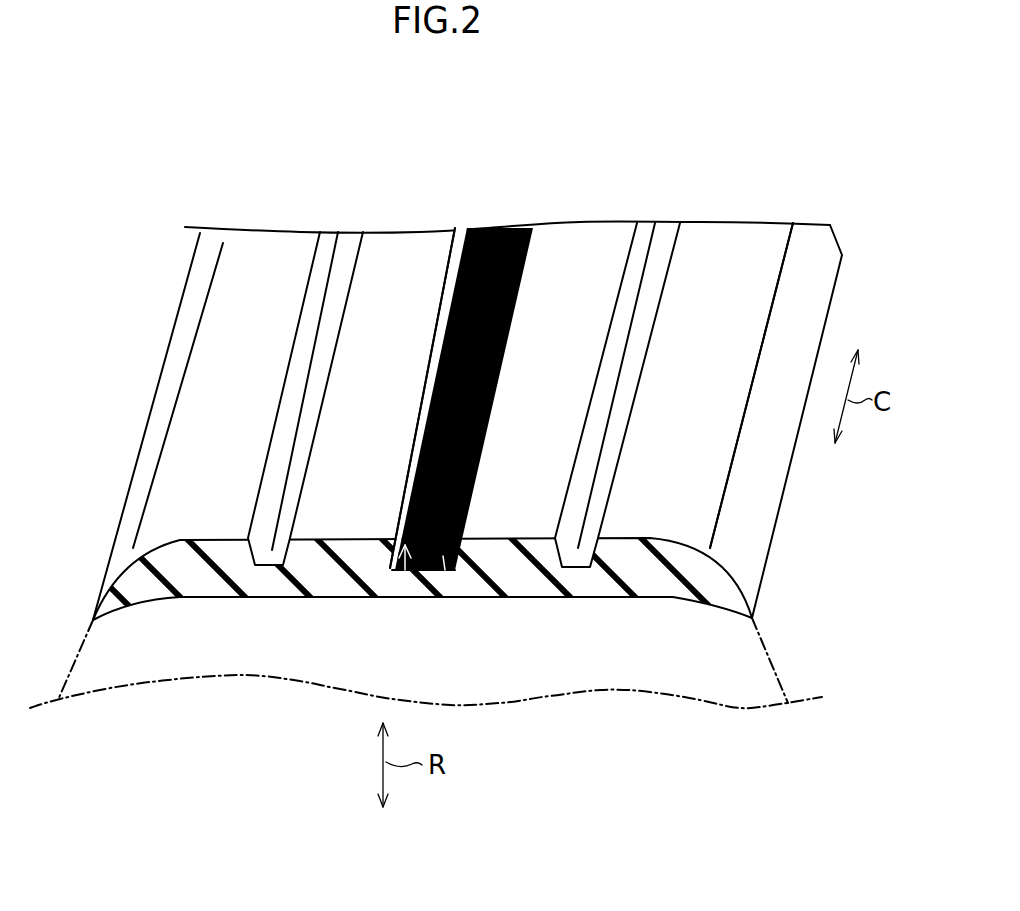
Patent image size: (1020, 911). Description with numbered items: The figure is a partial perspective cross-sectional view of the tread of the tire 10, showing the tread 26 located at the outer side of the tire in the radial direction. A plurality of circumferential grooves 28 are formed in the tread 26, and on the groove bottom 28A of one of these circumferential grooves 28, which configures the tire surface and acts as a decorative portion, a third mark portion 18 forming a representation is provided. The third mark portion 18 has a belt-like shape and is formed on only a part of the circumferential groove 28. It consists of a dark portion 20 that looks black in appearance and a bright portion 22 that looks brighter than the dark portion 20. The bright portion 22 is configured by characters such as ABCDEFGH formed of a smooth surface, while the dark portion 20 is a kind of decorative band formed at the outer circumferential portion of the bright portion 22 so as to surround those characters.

The tire 10 is at (760, 135).
The third mark portion 18 is at (505, 223).
The dark portion 20 is at (453, 347).
The bright portion 22 is at (487, 270).
The tread 26 is at (732, 257).
The circumferential grooves 28 is at (405, 558).
The groove bottom 28A is at (310, 702).